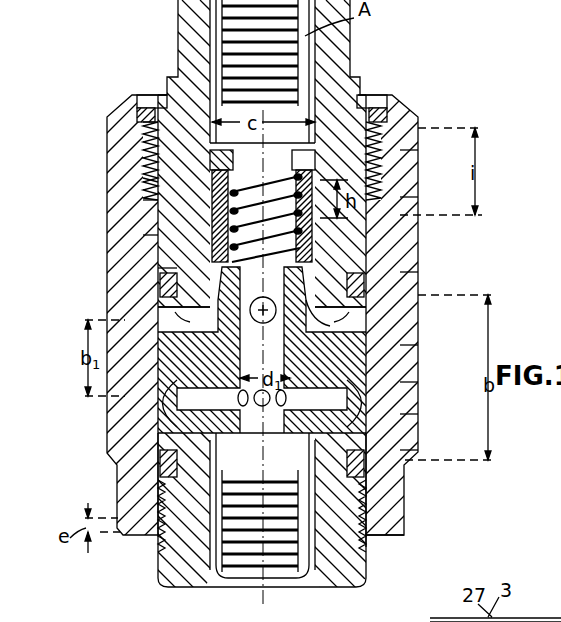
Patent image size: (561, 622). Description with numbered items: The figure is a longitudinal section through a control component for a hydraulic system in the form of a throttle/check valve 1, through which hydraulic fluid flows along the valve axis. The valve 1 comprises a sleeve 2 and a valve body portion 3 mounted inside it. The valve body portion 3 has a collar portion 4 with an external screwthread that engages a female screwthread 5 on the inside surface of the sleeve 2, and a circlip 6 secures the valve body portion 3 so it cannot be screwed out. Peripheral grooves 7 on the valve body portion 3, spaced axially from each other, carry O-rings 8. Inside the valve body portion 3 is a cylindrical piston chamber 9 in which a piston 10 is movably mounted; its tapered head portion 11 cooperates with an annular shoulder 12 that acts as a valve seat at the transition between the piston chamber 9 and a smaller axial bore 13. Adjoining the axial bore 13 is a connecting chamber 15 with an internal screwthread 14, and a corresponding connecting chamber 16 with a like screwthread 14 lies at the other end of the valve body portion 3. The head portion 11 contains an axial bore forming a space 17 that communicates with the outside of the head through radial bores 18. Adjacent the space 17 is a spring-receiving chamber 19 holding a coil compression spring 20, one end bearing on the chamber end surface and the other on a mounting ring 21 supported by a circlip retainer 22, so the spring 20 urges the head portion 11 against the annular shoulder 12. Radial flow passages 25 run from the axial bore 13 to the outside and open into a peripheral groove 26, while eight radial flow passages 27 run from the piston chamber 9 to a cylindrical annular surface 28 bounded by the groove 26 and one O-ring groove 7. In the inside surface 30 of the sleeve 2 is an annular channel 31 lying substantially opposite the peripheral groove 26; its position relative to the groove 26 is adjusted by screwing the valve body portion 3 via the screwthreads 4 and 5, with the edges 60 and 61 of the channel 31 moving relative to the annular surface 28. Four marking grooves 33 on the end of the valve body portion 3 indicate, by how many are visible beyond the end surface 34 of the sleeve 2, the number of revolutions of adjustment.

The throttle/check valve 1 is at (126, 38).
The sleeve 2 is at (102, 113).
The valve body portion 3 is at (346, 107).
The collar portion 4 is at (400, 150).
The female screwthread 5 is at (400, 197).
The circlip 6 is at (380, 120).
The peripheral grooves 7 is at (165, 270).
The O-rings 8 is at (160, 292).
The piston chamber 9 is at (313, 140).
The piston 10 is at (400, 250).
The head portion 11 is at (355, 340).
The annular shoulder 12 is at (195, 350).
The axial bore 13 is at (357, 401).
The internal screwthread 14 is at (184, 18).
The connecting chamber 15 is at (167, 555).
The connecting chamber 16 is at (302, 63).
The axial bore (space) 17 is at (363, 323).
The radial bores 18 is at (264, 297).
The spring-receiving chamber 19 is at (150, 238).
The coil compression spring 20 is at (150, 207).
The mounting ring 21 is at (150, 180).
The circlip retainer 22 is at (150, 147).
The radial flow passages 25 is at (405, 382).
The peripheral groove 26 is at (405, 414).
The radial flow passages 27 is at (178, 322).
The annular surface 28 is at (405, 345).
The inside surface 30 is at (400, 272).
The annular channel 31 is at (405, 450).
The marking grooves 33 is at (357, 548).
The end surface 34 is at (382, 541).
The edge 60 is at (170, 393).
The edge 61 is at (117, 433).